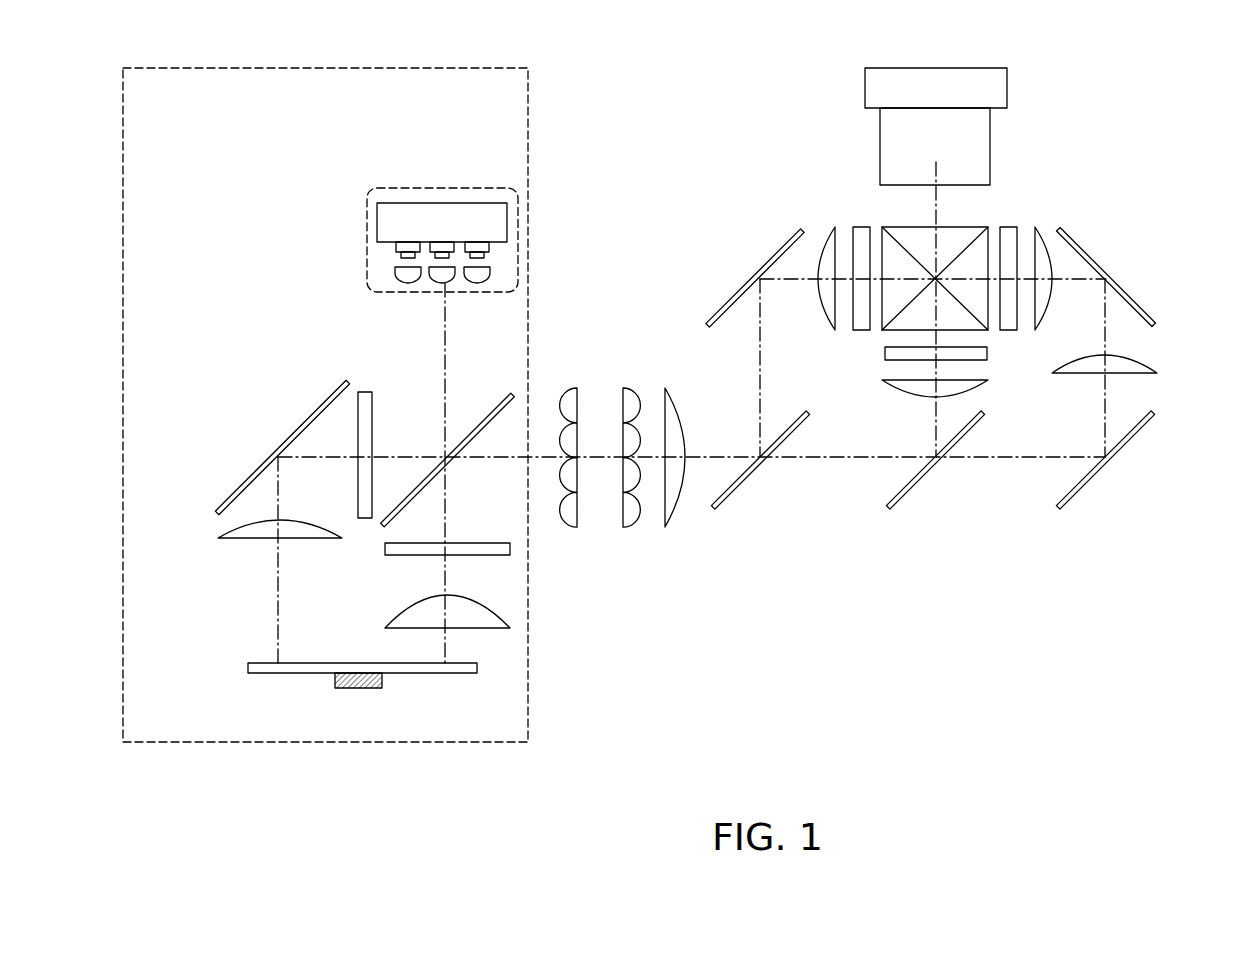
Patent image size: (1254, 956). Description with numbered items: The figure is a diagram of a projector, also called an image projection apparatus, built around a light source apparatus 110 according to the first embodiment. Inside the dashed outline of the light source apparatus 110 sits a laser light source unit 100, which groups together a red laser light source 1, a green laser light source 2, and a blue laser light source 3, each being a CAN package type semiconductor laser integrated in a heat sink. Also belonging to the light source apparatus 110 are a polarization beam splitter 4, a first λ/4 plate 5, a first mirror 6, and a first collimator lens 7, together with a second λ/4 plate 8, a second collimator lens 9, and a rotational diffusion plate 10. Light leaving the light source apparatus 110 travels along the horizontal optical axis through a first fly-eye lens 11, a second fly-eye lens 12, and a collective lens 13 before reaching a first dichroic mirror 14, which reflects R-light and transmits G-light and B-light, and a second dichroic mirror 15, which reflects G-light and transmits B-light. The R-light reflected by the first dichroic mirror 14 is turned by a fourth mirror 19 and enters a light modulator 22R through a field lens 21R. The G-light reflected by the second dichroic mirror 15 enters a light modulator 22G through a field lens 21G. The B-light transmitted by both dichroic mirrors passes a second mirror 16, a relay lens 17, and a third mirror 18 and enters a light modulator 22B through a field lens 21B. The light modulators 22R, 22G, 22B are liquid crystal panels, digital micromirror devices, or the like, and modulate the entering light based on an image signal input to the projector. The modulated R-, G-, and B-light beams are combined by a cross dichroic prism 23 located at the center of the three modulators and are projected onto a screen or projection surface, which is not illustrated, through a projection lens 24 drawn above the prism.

The red (R) laser light source 1 is at (400, 248).
The green (G) laser light source 2 is at (478, 250).
The blue (B) laser light source 3 is at (430, 245).
The polarization beam splitter 4 is at (505, 400).
The first λ/4 plate 5 is at (365, 418).
The first mirror 6 is at (228, 495).
The first collimator lens 7 is at (232, 540).
The second λ/4 plate 8 is at (485, 548).
The second collimator lens 9 is at (495, 620).
The rotational diffusion plate 10 is at (260, 665).
The first fly-eye lens 11 is at (575, 400).
The second fly-eye lens 12 is at (625, 400).
The collective lens 13 is at (678, 420).
The first dichroic mirror 14 is at (725, 495).
The second dichroic mirror 15 is at (905, 490).
The second mirror 16 is at (1075, 490).
The relay lens 17 is at (1140, 375).
The third mirror 18 is at (1120, 310).
The fourth mirror 19 is at (760, 280).
The field lens for R-light 21R is at (825, 240).
The field lens for G-light 21G is at (925, 390).
The field lens for B-light 21B is at (1040, 240).
The light modulator for R-light 22R is at (855, 235).
The light modulator for G-light 22G is at (890, 352).
The light modulator for B-light 22B is at (1010, 240).
The cross dichroic prism 23 is at (958, 325).
The projection lens 24 is at (880, 100).
The laser light source unit 100 is at (478, 186).
The light source apparatus 110 is at (368, 65).